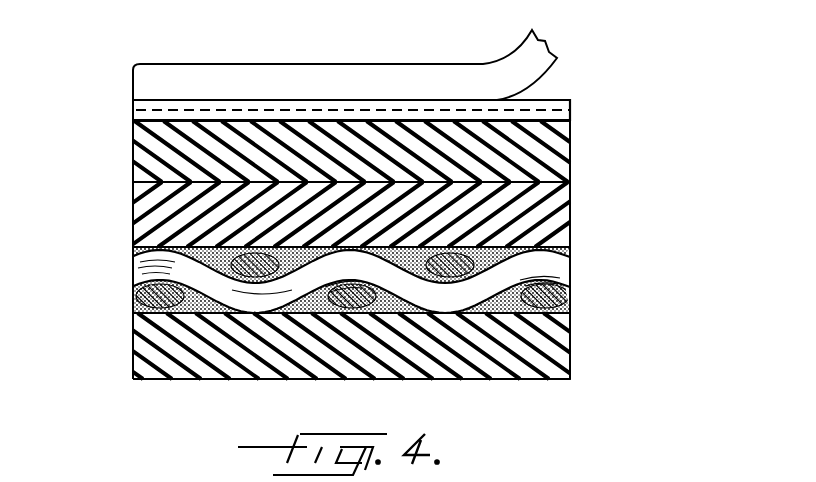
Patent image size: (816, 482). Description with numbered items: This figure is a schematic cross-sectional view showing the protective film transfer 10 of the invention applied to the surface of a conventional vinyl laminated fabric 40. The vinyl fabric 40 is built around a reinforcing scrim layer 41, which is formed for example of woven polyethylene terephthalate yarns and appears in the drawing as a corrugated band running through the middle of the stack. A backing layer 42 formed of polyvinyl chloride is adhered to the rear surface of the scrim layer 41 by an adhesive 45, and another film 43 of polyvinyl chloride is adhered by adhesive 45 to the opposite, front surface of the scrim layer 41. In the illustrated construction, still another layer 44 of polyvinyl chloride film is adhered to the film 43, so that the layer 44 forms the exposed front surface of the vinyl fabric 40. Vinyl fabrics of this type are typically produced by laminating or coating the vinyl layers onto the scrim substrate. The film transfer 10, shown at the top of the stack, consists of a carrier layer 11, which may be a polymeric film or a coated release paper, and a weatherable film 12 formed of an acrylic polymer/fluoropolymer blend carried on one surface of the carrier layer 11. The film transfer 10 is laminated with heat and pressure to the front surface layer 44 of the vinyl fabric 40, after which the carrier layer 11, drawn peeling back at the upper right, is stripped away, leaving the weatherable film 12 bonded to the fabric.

The film transfer 10 is at (131, 70).
The carrier layer 11 is at (221, 66).
The weatherable film 12 is at (133, 110).
The vinyl fabric 40 is at (600, 187).
The reinforcing scrim layer 41 is at (133, 268).
The backing layer 42 is at (133, 341).
The film 43 is at (133, 219).
The layer 44 is at (133, 152).
The adhesive 45 is at (133, 305).